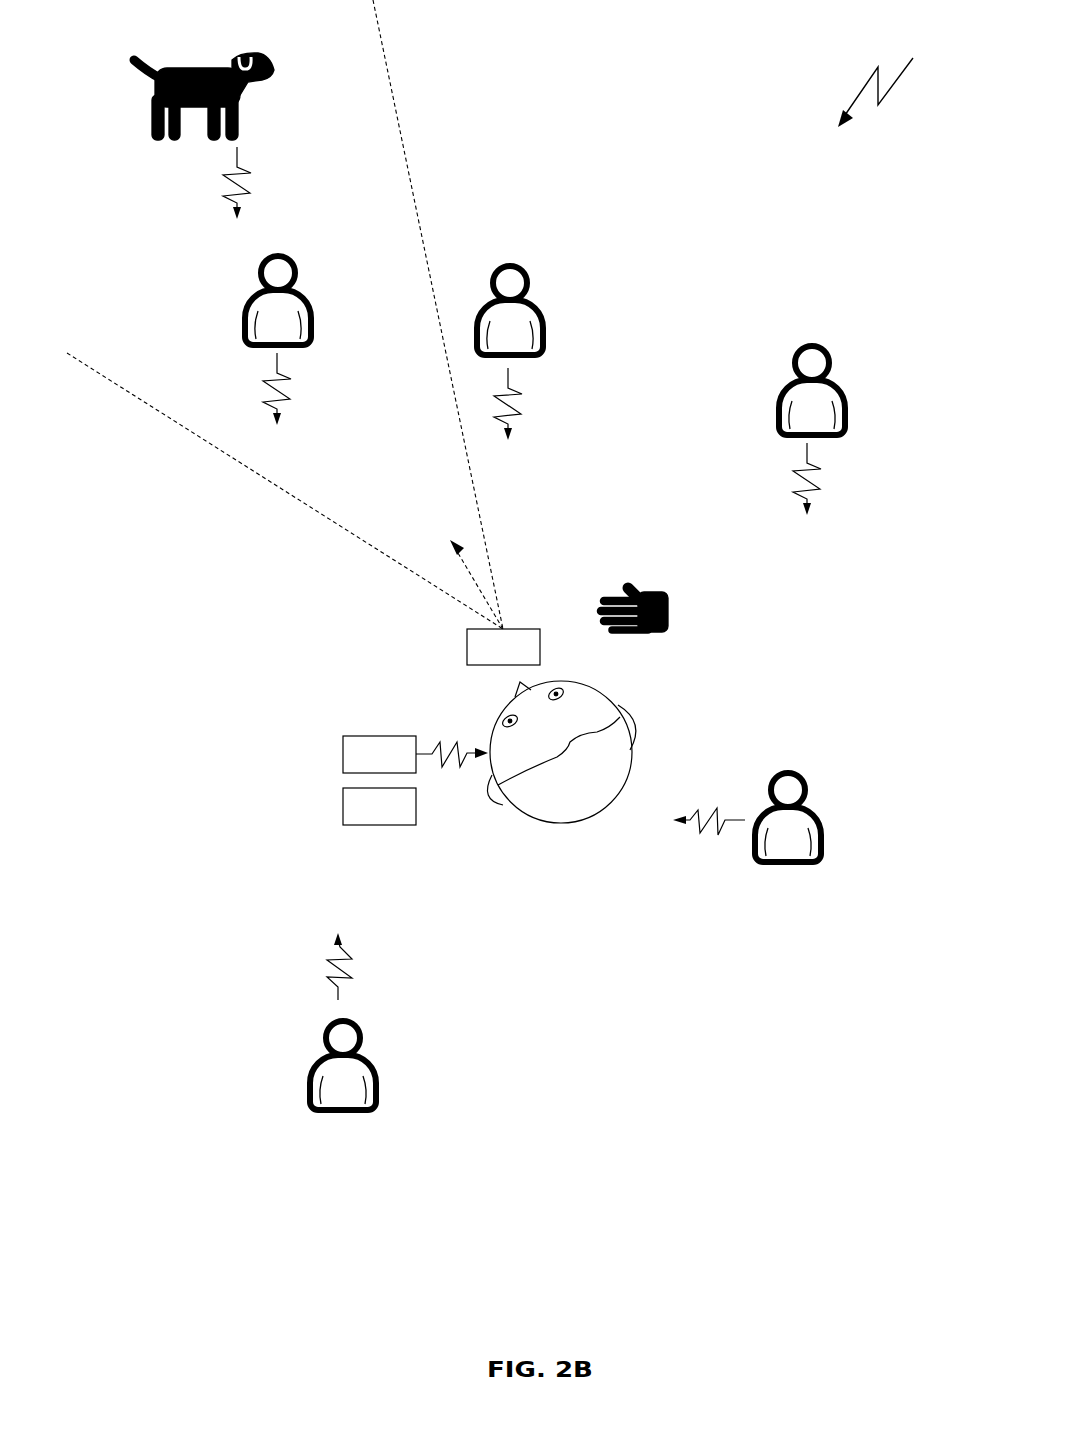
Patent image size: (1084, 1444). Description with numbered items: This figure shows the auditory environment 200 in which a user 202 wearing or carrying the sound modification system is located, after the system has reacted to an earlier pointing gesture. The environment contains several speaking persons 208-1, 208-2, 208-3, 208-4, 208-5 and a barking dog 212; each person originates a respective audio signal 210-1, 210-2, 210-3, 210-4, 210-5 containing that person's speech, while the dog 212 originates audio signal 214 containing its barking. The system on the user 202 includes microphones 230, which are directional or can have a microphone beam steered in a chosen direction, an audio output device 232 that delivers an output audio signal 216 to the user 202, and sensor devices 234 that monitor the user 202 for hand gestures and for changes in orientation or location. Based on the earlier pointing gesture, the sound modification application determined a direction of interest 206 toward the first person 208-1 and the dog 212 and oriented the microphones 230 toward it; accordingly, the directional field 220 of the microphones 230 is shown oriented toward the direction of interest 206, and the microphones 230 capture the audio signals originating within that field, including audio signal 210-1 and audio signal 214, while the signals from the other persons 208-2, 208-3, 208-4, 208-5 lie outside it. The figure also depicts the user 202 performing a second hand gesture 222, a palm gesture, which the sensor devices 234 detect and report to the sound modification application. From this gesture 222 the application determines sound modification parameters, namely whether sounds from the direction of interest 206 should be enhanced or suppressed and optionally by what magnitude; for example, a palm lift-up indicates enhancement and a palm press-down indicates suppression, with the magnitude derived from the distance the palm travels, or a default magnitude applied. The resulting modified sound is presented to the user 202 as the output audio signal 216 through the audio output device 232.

The auditory environment 200 is at (887, 82).
The user 202 is at (630, 740).
The direction of interest 206 is at (462, 548).
The person 208-1 is at (297, 270).
The person 208-2 is at (575, 243).
The person 208-3 is at (835, 360).
The person 208-4 is at (860, 752).
The person 208-5 is at (415, 1003).
The audio signal 210-1 is at (290, 395).
The audio signal 210-2 is at (520, 396).
The audio signal 210-3 is at (820, 482).
The audio signal 210-4 is at (690, 830).
The audio signal 210-5 is at (328, 966).
The dog 212 is at (152, 120).
The audio signal 214 is at (242, 185).
The output audio signal 216 is at (465, 760).
The directional field 220 is at (418, 200).
The hand gesture 222 is at (668, 612).
The microphones 230 is at (503, 647).
The audio output device 232 is at (379, 754).
The sensor devices 234 is at (379, 806).